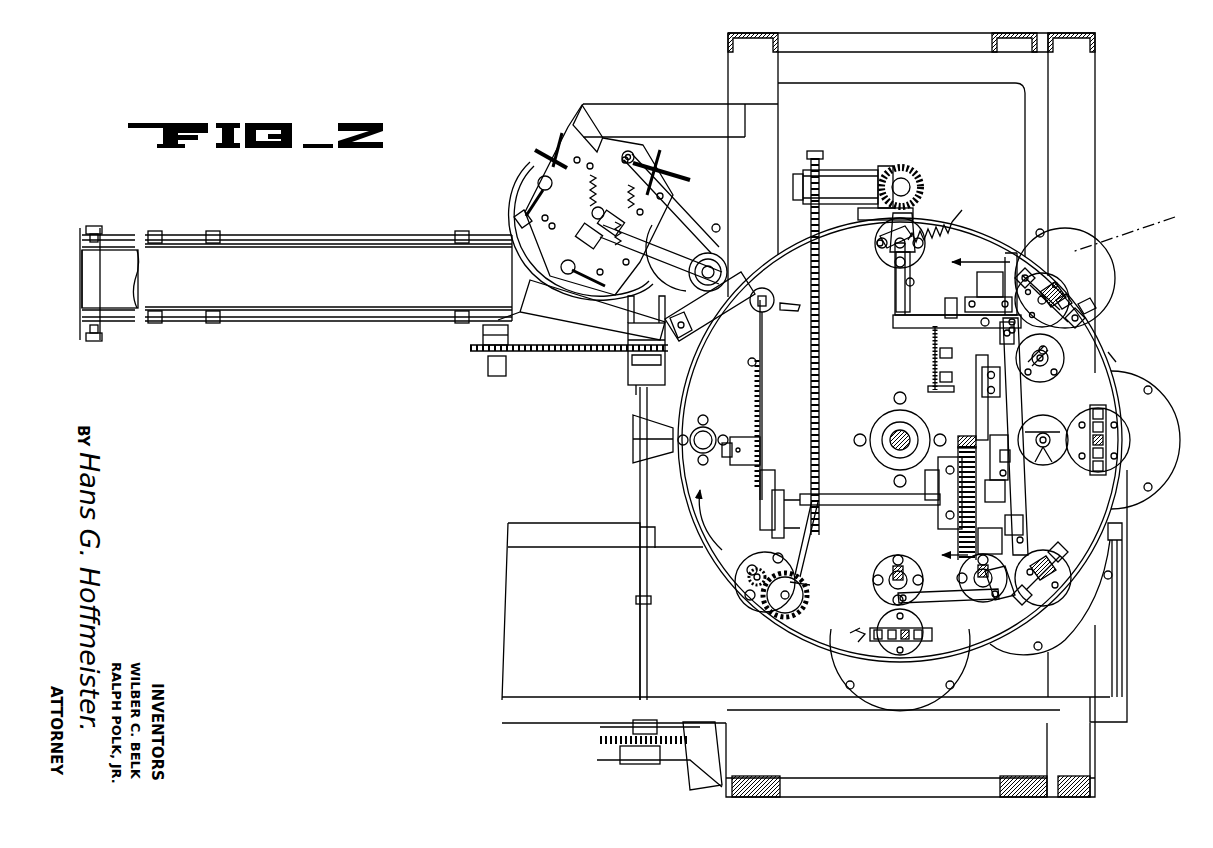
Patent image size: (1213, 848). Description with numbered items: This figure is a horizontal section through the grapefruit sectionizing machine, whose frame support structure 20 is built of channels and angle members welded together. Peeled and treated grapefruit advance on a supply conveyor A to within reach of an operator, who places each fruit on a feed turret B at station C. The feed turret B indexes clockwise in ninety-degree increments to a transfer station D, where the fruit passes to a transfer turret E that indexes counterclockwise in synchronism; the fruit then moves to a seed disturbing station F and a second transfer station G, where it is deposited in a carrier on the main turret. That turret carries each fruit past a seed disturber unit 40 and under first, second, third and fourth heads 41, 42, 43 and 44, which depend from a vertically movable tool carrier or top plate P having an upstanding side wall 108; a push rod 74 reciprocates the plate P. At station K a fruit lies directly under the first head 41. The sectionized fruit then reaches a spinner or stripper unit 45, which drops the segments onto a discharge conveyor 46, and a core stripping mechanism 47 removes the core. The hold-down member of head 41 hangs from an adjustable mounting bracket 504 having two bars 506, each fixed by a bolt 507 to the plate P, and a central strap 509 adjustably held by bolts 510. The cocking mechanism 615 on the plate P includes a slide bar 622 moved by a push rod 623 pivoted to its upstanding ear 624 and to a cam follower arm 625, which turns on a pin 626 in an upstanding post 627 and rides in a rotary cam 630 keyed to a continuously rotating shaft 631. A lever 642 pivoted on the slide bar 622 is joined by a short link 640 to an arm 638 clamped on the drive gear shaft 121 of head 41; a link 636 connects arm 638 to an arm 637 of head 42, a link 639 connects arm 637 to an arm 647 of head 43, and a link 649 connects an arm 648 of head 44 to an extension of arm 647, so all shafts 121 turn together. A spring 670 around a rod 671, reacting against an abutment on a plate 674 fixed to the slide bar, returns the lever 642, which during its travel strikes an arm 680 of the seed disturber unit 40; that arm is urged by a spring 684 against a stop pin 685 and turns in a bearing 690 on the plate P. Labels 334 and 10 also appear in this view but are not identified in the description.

The frame support structure 20 is at (1100, 103).
The supply conveyor A is at (320, 296).
The feed turret B is at (520, 150).
The station C is at (512, 215).
The transfer station D is at (718, 216).
The transfer turret E is at (703, 228).
The seed disturbing station F is at (684, 330).
The second transfer station G is at (772, 290).
The core stripping mechanism 47 is at (712, 432).
The discharge conveyor 46 is at (635, 612).
The spinner or stripper unit 45 is at (740, 592).
The terminal block 334 is at (862, 636).
The arm 648 is at (882, 574).
The drive gear shaft 121 is at (983, 583).
The link 649 is at (1003, 600).
The fourth head 44 is at (967, 676).
The third head 43 is at (1105, 607).
The second head 42 is at (1163, 410).
The upstanding side wall 108 is at (1108, 365).
The tool carrier or top plate P is at (1114, 357).
The push rod 74 is at (893, 460).
The cocking mechanism 615 is at (963, 434).
The spring 670 is at (932, 338).
The rod 671 is at (940, 353).
The plate 674 is at (940, 361).
The short link 640 is at (1002, 336).
The arm 680 is at (897, 313).
The lever 642 is at (905, 330).
The stop pin 685 is at (914, 283).
The seed disturber unit 40 is at (892, 255).
The bearing 690 is at (880, 241).
The spring 684 is at (1016, 220).
The first head 41 is at (1120, 268).
The bars 506 is at (1030, 266).
The bolt 507 is at (1030, 254).
The central strap 509 is at (1062, 286).
The bolts 510 is at (1064, 302).
The adjustable mounting bracket 504 is at (1090, 312).
The station K is at (1134, 226).
The arm 638 is at (1040, 363).
The upstanding ear 624 is at (1002, 394).
The slide bar 622 is at (982, 408).
The link 636 is at (1026, 413).
The arm 637 is at (1022, 438).
The push rod 623 is at (1002, 440).
The cam follower arm 625 is at (1000, 456).
The pin 626 is at (1002, 470).
The link 639 is at (1022, 526).
The arm 647 is at (1034, 546).
The upstanding post 627 is at (940, 516).
The shaft 631 is at (854, 500).
The rotary cam 630 is at (962, 543).
The station marker 10 is at (991, 413).